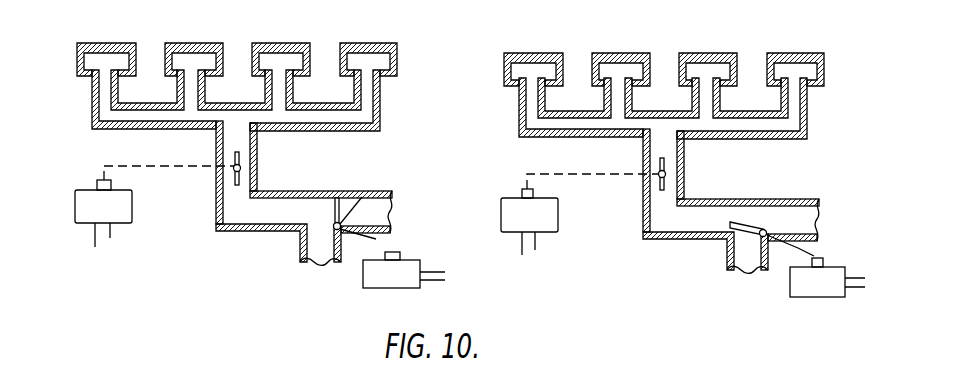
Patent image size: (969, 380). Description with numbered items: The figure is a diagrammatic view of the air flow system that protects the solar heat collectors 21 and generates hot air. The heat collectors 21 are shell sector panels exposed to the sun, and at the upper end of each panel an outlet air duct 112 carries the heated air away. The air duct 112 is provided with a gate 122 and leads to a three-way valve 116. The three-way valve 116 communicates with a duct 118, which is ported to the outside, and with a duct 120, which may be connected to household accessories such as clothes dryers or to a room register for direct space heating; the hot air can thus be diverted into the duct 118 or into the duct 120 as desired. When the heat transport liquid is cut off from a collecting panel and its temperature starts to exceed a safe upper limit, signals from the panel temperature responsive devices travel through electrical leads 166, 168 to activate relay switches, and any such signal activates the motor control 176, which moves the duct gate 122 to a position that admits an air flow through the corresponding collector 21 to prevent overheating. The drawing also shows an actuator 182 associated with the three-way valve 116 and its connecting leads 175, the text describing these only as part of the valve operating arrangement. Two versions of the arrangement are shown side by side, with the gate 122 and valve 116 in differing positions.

The solar heat collector 21 is at (118, 43).
The outlet air duct 112 is at (231, 234).
The three-way valve 116 is at (361, 196).
The duct 118 is at (300, 246).
The duct 120 is at (391, 218).
The gate 122 is at (240, 163).
The electrical lead 166 is at (110, 236).
The electrical lead 168 is at (536, 242).
The electrical leads 175 is at (445, 272).
The motor control 176 is at (132, 207).
The damper actuator 182 is at (443, 280).